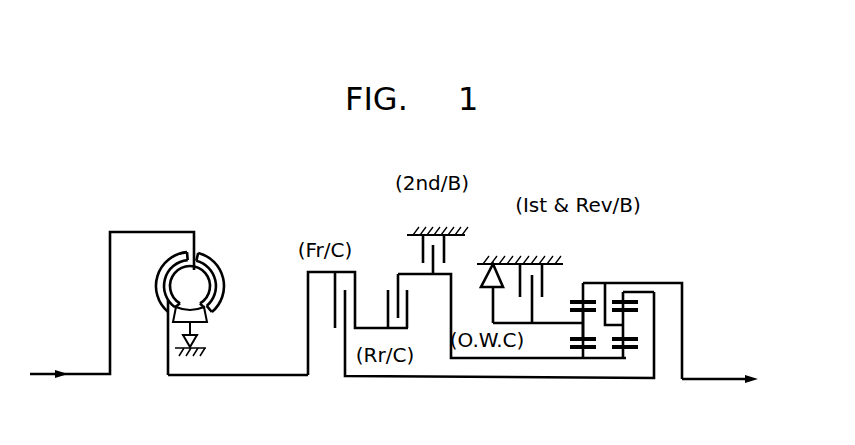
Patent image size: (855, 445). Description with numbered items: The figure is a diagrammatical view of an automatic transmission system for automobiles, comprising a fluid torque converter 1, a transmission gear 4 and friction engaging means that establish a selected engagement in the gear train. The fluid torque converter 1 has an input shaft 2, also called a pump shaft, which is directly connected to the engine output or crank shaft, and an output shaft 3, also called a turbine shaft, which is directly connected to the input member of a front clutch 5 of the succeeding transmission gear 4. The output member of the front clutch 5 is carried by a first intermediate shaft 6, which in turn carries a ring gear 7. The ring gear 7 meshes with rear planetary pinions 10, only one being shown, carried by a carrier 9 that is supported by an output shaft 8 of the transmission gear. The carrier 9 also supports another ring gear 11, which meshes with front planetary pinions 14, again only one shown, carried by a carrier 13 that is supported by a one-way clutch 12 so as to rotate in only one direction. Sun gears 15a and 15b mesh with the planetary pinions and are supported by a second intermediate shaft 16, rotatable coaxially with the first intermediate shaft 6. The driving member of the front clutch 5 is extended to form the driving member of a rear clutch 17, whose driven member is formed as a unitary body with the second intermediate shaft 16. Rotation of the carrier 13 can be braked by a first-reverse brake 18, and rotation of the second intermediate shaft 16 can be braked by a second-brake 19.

The fluid torque converter 1 is at (214, 258).
The input shaft 2 is at (85, 373).
The output shaft 3 is at (270, 374).
The transmission gear 4 is at (620, 283).
The front clutch 5 is at (355, 272).
The first intermediate shaft 6 is at (497, 379).
The ring gear 7 is at (628, 300).
The output shaft 8 is at (718, 379).
The carrier 9 is at (590, 283).
The rear planetary pinions 10 is at (625, 317).
The ring gear 11 is at (574, 302).
The one-way clutch 12 is at (481, 277).
The carrier 13 is at (554, 324).
The front planetary pinions 14 is at (585, 331).
The sun gear 15a is at (632, 348).
The sun gear 15b is at (575, 348).
The second intermediate shaft 16 is at (468, 359).
The rear clutch 17 is at (408, 297).
The first-reverse brake 18 is at (548, 265).
The second-brake 19 is at (443, 238).